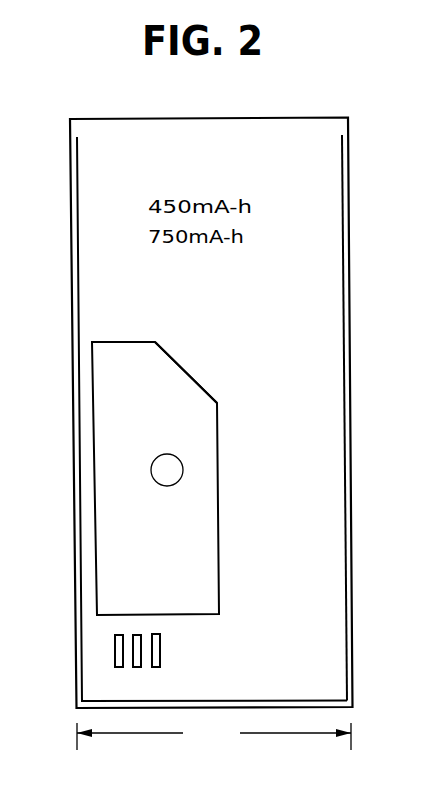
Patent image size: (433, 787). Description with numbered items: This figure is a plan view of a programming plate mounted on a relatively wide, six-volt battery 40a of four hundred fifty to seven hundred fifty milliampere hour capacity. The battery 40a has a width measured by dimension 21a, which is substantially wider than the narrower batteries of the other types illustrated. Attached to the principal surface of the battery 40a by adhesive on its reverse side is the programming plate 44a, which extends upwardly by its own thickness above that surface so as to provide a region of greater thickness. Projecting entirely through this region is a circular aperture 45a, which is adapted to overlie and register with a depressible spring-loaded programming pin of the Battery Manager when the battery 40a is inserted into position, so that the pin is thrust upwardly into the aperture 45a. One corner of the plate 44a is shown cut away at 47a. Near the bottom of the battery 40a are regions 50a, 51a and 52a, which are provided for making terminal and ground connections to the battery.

The battery 40a is at (60, 444).
The width dimension 21a is at (214, 736).
The programming plate 44a is at (195, 432).
The circular aperture 45a is at (318, 378).
The chamfered corner 47a is at (197, 382).
The region 50a is at (118, 667).
The region 51a is at (137, 667).
The region 52a is at (160, 652).